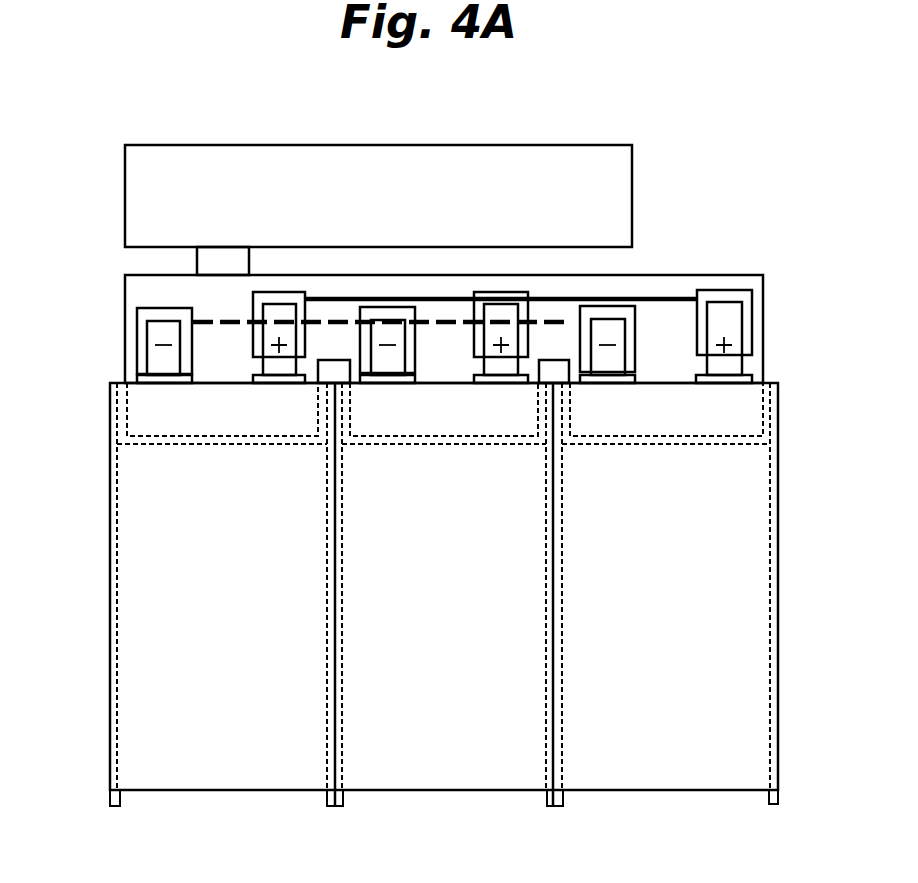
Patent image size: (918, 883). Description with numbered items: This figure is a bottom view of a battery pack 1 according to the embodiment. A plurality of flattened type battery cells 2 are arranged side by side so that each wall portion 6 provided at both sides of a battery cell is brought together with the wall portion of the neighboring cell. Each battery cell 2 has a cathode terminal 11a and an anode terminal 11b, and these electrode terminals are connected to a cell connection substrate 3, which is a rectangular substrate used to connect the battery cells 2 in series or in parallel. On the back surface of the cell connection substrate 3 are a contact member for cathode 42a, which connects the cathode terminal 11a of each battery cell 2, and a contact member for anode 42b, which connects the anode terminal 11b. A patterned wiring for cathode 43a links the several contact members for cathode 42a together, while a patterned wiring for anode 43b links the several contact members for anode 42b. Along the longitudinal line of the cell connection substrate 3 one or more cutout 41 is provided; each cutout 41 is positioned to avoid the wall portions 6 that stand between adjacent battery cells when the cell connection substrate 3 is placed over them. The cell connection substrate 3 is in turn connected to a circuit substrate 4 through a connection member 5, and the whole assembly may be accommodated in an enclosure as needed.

The battery pack 1 is at (755, 119).
The battery cell 2 is at (218, 778).
The cell connection substrate 3 is at (763, 312).
The circuit substrate 4 is at (615, 169).
The connection member 5 is at (197, 258).
The wall portion 6 is at (343, 797).
The cathode terminal 11a is at (271, 316).
The anode terminal 11b is at (157, 365).
The cutout 41 is at (333, 372).
The contact member for cathode 42a is at (272, 295).
The contact member for anode 42b is at (138, 346).
The patterned wiring for cathode 43a is at (677, 297).
The patterned wiring for anode 43b is at (553, 320).